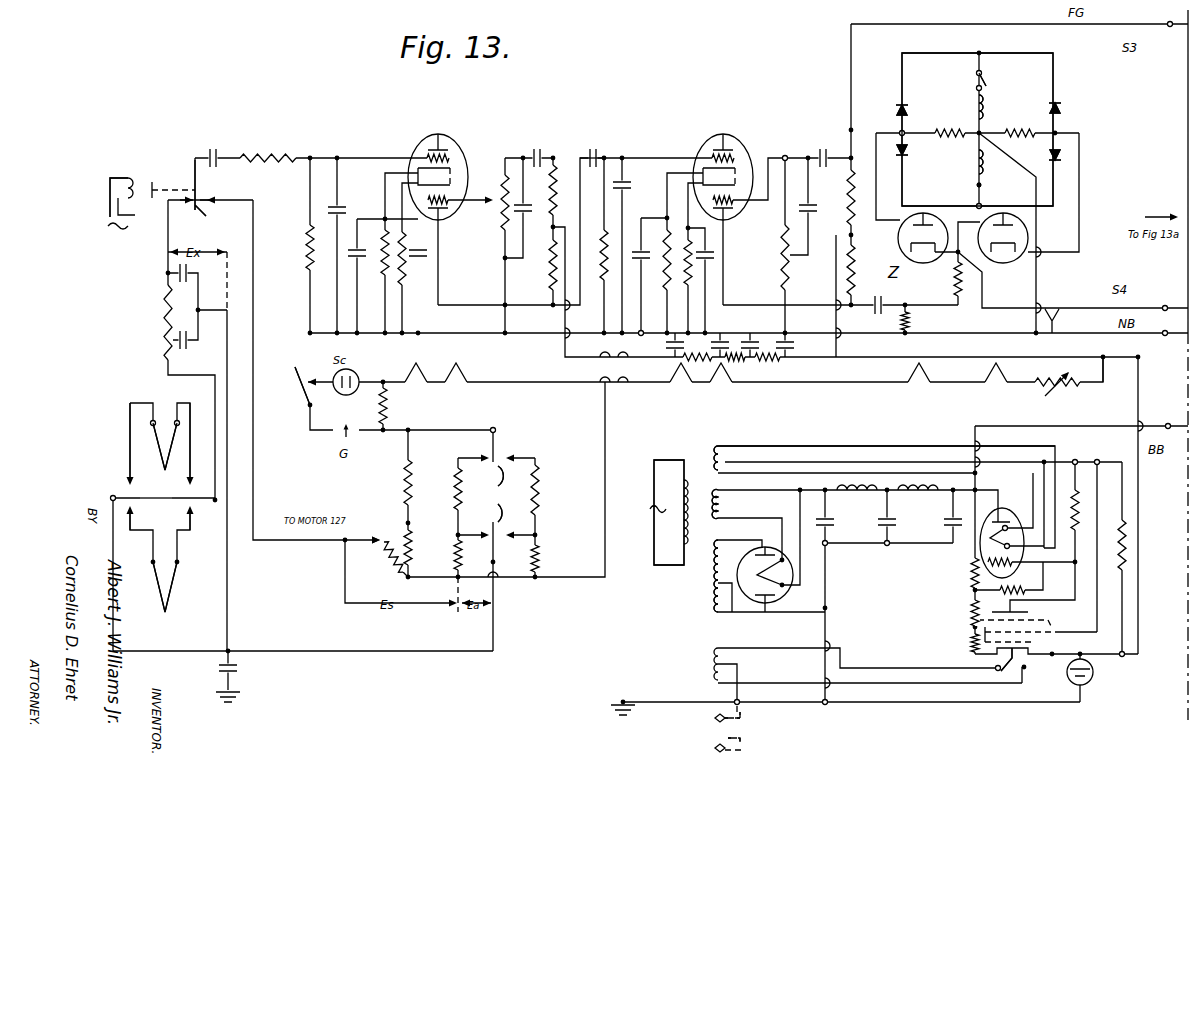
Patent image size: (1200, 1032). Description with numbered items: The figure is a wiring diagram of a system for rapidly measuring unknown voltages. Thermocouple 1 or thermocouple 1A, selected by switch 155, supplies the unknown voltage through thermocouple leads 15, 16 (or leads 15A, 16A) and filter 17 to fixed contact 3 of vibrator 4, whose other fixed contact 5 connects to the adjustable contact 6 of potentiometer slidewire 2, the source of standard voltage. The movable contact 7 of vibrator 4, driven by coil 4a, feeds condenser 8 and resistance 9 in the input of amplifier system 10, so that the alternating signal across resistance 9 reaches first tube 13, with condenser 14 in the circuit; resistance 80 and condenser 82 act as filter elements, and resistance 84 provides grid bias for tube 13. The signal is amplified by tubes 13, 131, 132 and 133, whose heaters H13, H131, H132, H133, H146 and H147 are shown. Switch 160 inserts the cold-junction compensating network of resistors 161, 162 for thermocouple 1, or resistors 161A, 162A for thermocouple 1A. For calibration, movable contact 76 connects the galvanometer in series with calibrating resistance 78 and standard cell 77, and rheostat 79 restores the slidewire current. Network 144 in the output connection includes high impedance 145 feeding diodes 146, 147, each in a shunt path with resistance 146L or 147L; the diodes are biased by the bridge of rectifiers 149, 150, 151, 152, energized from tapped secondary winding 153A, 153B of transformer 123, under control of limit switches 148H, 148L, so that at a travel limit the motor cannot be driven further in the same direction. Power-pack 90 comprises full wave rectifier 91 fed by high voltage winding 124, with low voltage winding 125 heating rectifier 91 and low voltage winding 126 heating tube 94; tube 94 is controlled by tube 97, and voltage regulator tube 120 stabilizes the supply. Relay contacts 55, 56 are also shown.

The thermocouple 1 is at (162, 452).
The thermocouple 1A is at (157, 587).
The potentiometer slidewire 2 is at (380, 570).
The fixed contact 3 is at (186, 202).
The vibrator 4 is at (173, 172).
The coil 4a is at (119, 187).
The fixed contact 5 is at (211, 200).
The adjustable contact 6 is at (376, 536).
The movable contact 7 is at (204, 212).
The condenser 8 is at (216, 149).
The resistance 9 is at (307, 248).
The amplifier system 10 is at (618, 123).
The first tube 13 is at (450, 162).
The capacitor 14 is at (240, 672).
The thermocouple lead 15 is at (191, 456).
The contact 15A is at (180, 552).
The thermocouple lead 16 is at (128, 447).
The contact 16A is at (150, 554).
The filter 17 is at (150, 316).
The relay contacts 55 is at (743, 718).
The relay contacts 56 is at (745, 744).
The movable contact 76 is at (294, 377).
The standard cell 77 is at (358, 378).
The calibrating resistance 78 is at (378, 408).
The rheostat 79 is at (1050, 389).
The resistance 80 is at (285, 151).
The condenser 82 is at (363, 244).
The resistance 84 is at (381, 268).
The power-pack 90 is at (855, 440).
The full wave rectifier 91 is at (776, 606).
The tube 94 is at (1016, 570).
The tube 97 is at (1032, 676).
The voltage regulator tube 120 is at (1093, 683).
The transformer 123 is at (694, 590).
The high voltage winding 124 is at (714, 601).
The low voltage winding 125 is at (726, 506).
The low voltage winding 126 is at (717, 452).
The tube 131 is at (446, 215).
The tube 132 is at (743, 153).
The tube 133 is at (740, 207).
The network 144 is at (1118, 197).
The high impedance 145 is at (953, 288).
The diode 146 is at (1009, 264).
The resistance 146L is at (1012, 128).
The diode 147 is at (898, 249).
The resistance 147L is at (934, 124).
The limit switch 148H is at (984, 84).
The limit switch 148L is at (982, 188).
The rectifier 149 is at (896, 117).
The rectifier 150 is at (908, 153).
The rectifier 151 is at (1061, 109).
The rectifier 152 is at (1062, 156).
The tapped secondary winding 153A is at (975, 112).
The tapped secondary winding 153B is at (975, 170).
The switch 155 is at (170, 498).
The switch 160 is at (500, 502).
The resistor 161 is at (454, 480).
The resistor 161A is at (541, 478).
The resistor 162 is at (454, 546).
The resistor 162A is at (541, 559).
The heater H13 is at (418, 384).
The heater H131 is at (463, 383).
The heater H132 is at (680, 384).
The heater H133 is at (727, 383).
The heater H146 is at (989, 384).
The heater H147 is at (911, 384).